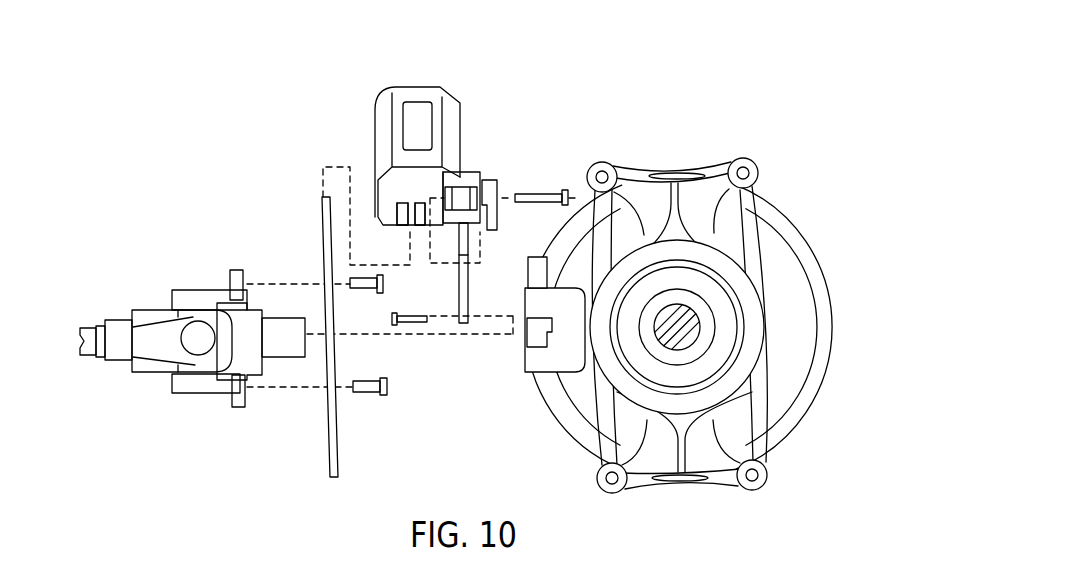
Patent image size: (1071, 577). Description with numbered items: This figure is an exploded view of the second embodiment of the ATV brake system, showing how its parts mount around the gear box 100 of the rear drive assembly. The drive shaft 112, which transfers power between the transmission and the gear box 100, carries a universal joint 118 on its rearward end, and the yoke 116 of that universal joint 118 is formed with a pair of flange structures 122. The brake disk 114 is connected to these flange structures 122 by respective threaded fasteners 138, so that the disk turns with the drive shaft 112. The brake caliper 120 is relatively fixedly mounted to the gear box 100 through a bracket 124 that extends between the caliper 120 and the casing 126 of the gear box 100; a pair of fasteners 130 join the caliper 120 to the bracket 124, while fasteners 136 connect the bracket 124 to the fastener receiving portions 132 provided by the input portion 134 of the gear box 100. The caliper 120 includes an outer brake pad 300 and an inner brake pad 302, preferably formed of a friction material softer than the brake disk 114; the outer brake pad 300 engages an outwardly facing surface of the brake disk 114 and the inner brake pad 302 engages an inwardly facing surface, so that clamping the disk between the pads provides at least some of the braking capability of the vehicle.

The gear box 100 is at (679, 327).
The drive shaft 112 is at (102, 326).
The brake disk 114 is at (325, 455).
The yoke 116 is at (188, 381).
The universal joint 118 is at (177, 266).
The brake caliper 120 is at (417, 93).
The flange structures 122 is at (233, 271).
The bracket 124 is at (468, 293).
The casing 126 is at (773, 436).
The fasteners 130 is at (545, 193).
The fastener receiving portions 132 is at (535, 333).
The input portion 134 is at (570, 352).
The fasteners 136 is at (407, 313).
The threaded fasteners 138 is at (366, 288).
The outer brake pad 300 is at (405, 228).
The inner brake pad 302 is at (418, 227).